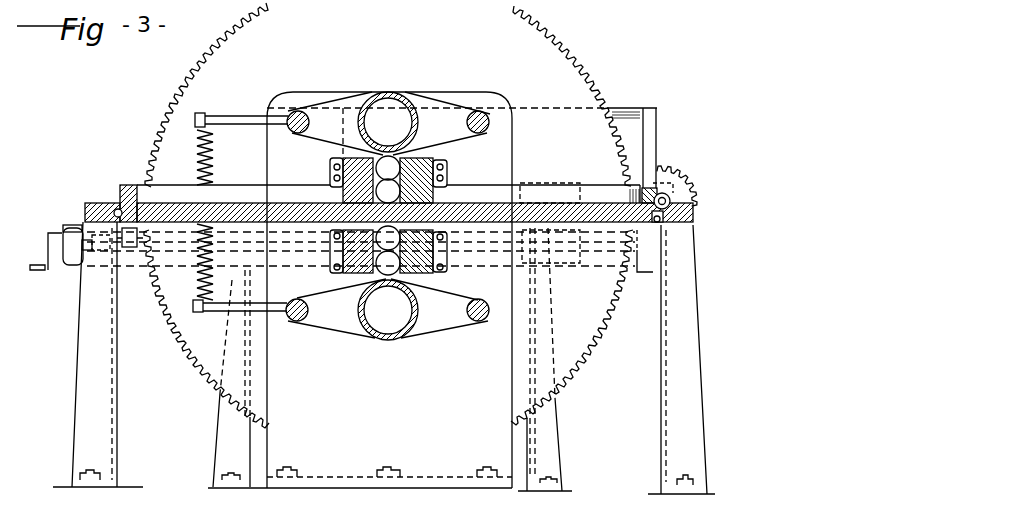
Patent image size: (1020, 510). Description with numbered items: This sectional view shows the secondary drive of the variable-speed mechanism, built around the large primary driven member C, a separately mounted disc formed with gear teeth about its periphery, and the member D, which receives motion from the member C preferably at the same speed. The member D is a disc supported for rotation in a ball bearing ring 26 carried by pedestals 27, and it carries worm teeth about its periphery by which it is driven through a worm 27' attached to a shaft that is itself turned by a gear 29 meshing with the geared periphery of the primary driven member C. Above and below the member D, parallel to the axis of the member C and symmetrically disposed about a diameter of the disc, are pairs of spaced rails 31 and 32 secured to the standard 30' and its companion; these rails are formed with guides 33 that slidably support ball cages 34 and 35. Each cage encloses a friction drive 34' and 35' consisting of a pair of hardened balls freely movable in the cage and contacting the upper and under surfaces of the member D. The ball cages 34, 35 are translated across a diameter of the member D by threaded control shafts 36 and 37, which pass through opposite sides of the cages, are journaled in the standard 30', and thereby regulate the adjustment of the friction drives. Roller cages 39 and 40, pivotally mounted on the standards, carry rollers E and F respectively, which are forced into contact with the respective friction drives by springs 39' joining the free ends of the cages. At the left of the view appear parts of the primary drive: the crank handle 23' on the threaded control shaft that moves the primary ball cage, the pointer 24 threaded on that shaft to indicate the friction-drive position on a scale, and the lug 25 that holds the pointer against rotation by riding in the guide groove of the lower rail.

The primary driven member C is at (388, 215).
The member (disc) D is at (248, 177).
The roller E is at (388, 104).
The roller F is at (378, 333).
The crank handle 23' is at (64, 262).
The pointer 24 is at (129, 186).
The lug 25 is at (128, 247).
The ball bearing ring 26 is at (100, 203).
The pedestals 27 is at (388, 358).
The worm 27' is at (692, 205).
The gear 29 is at (685, 188).
The standard 30' is at (432, 290).
The rails 31 is at (428, 161).
The rails 32 is at (352, 275).
The guides 33 is at (345, 190).
The ball cage 34 is at (415, 159).
The friction drive 34' is at (391, 150).
The ball cage 35 is at (427, 272).
The friction drive 35' is at (389, 267).
The threaded control shaft 36 is at (446, 178).
The threaded control shaft 37 is at (330, 254).
The roller cage 39 is at (388, 108).
The springs 39' is at (226, 212).
The roller cage 40 is at (455, 325).